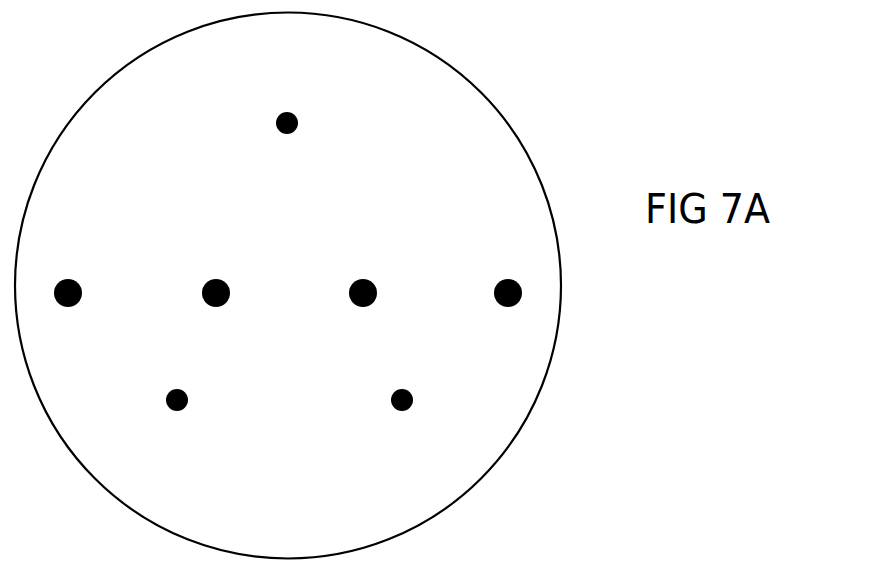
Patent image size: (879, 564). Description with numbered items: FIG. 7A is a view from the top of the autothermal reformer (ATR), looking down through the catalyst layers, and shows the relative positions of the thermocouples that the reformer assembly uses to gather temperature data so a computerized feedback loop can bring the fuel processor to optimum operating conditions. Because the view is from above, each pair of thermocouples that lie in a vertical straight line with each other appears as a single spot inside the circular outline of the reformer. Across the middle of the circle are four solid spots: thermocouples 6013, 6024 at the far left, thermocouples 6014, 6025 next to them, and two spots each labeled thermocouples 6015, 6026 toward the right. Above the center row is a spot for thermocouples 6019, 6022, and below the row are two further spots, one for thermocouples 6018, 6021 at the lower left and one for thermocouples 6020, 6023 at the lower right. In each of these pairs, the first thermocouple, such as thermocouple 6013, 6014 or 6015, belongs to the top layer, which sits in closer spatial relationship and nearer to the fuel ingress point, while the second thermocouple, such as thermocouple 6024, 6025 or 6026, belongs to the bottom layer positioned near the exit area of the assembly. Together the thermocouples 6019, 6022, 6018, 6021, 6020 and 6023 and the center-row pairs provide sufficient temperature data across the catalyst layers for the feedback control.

The thermocouple 6013 is at (107, 314).
The thermocouple 6024 is at (107, 314).
The thermocouple 6014 is at (214, 273).
The thermocouple 6025 is at (214, 273).
The thermocouple 6015 is at (422, 291).
The thermocouple 6026 is at (422, 291).
The thermocouple 6019 is at (292, 144).
The thermocouple 6022 is at (292, 144).
The thermocouple 6018 is at (173, 420).
The thermocouple 6021 is at (173, 420).
The thermocouple 6020 is at (406, 421).
The thermocouple 6023 is at (406, 421).